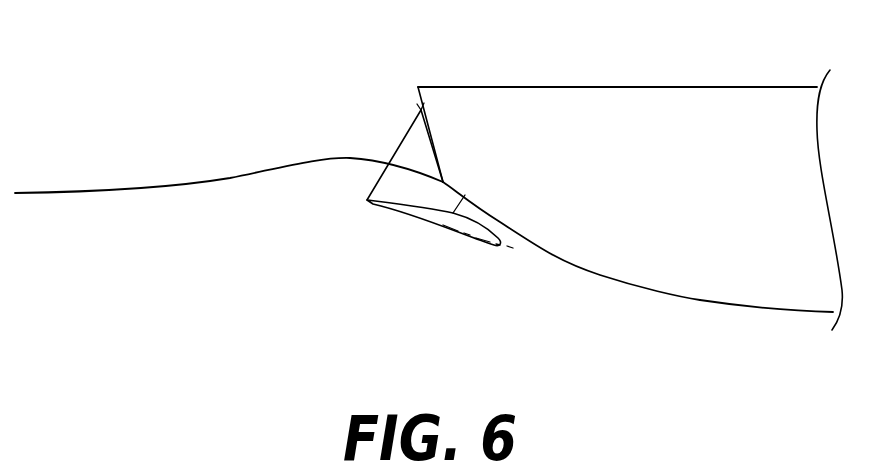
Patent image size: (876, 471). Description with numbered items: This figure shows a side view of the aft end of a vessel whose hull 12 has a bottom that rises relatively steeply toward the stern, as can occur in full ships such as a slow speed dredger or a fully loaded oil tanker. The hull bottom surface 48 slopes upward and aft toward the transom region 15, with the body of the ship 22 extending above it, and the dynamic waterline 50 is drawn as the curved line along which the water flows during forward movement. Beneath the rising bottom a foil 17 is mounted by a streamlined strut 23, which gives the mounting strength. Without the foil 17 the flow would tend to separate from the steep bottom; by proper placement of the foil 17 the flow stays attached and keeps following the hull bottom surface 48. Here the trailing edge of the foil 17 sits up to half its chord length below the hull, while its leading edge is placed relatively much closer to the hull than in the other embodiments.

The hull 12 is at (630, 105).
The transom 15 is at (420, 108).
The foil 17 is at (448, 225).
The hull portion aft 22 is at (698, 300).
The strut 23 is at (399, 181).
The hull bottom surface 48 is at (590, 270).
The dynamic waterline 50 is at (270, 177).